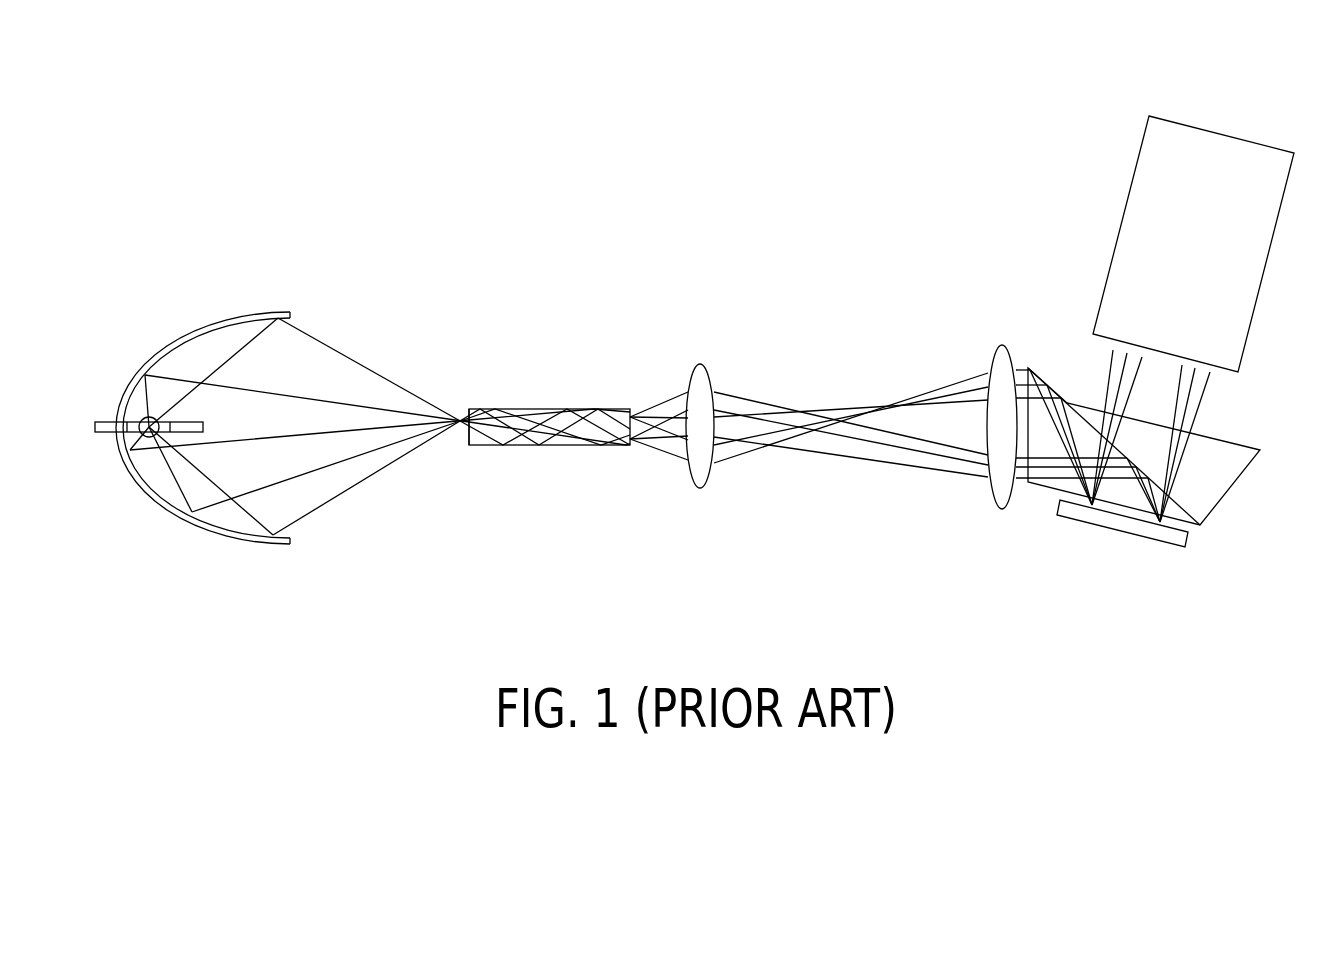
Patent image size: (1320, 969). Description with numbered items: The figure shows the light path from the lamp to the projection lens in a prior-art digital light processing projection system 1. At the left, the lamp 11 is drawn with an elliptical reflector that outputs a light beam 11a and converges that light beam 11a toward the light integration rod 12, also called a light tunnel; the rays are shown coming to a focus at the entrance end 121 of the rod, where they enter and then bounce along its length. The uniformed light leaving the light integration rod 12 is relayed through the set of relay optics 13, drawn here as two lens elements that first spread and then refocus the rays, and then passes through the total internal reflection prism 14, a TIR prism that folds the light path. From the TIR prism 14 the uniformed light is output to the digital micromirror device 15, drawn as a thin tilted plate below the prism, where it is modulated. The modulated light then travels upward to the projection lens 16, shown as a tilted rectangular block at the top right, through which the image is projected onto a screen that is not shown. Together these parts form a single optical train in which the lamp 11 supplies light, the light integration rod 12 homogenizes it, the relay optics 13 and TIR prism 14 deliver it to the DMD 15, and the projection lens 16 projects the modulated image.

The projection system 1 is at (303, 177).
The lamp 11 is at (230, 313).
The light beam 11a is at (390, 378).
The light integration rod 12 is at (526, 415).
The light entrance of integration rod 121 is at (465, 443).
The set of relay optics 13 is at (690, 376).
The total internal reflection prism 14 is at (1228, 440).
The digital micromirror device 15 is at (1120, 535).
The projection lens 16 is at (1222, 130).